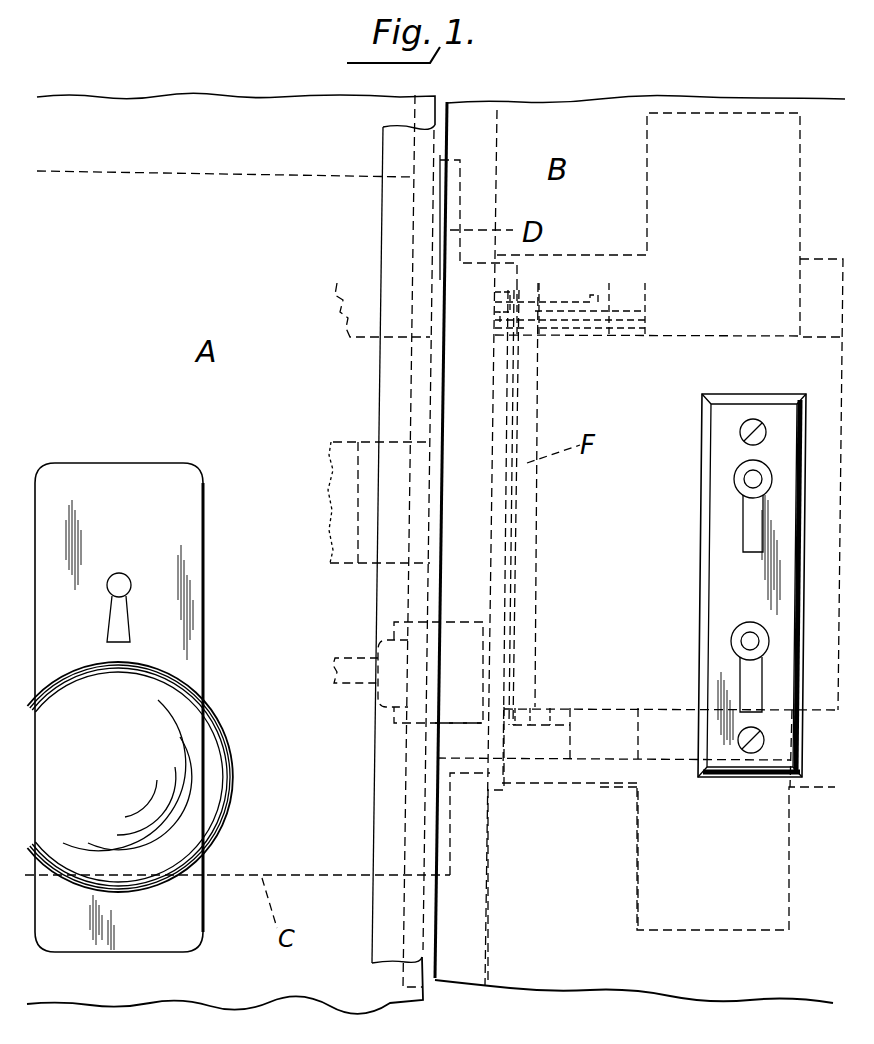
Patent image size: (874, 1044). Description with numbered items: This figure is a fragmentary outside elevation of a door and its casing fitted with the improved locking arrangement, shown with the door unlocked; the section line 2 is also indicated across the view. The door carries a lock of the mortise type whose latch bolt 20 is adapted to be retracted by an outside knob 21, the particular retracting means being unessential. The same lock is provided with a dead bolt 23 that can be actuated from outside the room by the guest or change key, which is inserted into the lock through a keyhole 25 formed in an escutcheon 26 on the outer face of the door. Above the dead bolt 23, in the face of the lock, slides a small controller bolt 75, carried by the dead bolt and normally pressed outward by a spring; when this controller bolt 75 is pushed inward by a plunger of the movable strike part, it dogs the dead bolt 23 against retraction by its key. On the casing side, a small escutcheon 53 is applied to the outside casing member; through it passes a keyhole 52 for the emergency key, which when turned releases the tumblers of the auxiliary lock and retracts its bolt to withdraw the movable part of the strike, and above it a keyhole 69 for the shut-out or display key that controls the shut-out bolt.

The section line 2- 2 is at (442, 155).
The latch bolt 20 is at (408, 672).
The outside knob 21 is at (129, 777).
The dead bolt 23 is at (370, 450).
The keyhole 25 is at (122, 585).
The escutcheon 26 is at (119, 707).
The keyhole 52 is at (748, 662).
The escutcheon 53 is at (722, 573).
The keyhole 69 is at (752, 511).
The controller bolt 75 is at (422, 308).